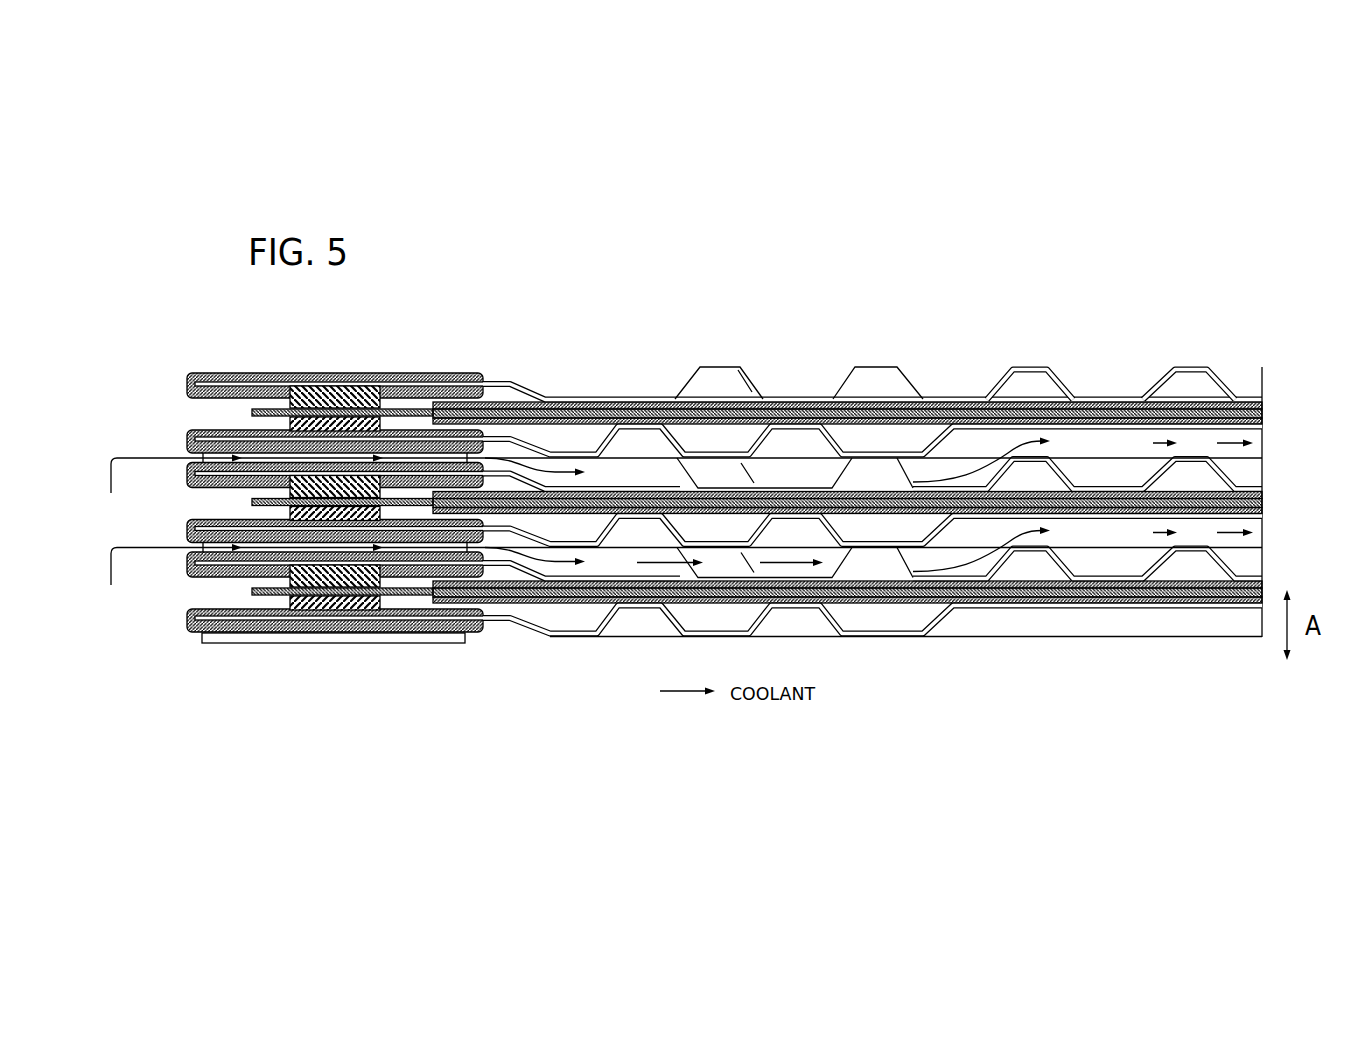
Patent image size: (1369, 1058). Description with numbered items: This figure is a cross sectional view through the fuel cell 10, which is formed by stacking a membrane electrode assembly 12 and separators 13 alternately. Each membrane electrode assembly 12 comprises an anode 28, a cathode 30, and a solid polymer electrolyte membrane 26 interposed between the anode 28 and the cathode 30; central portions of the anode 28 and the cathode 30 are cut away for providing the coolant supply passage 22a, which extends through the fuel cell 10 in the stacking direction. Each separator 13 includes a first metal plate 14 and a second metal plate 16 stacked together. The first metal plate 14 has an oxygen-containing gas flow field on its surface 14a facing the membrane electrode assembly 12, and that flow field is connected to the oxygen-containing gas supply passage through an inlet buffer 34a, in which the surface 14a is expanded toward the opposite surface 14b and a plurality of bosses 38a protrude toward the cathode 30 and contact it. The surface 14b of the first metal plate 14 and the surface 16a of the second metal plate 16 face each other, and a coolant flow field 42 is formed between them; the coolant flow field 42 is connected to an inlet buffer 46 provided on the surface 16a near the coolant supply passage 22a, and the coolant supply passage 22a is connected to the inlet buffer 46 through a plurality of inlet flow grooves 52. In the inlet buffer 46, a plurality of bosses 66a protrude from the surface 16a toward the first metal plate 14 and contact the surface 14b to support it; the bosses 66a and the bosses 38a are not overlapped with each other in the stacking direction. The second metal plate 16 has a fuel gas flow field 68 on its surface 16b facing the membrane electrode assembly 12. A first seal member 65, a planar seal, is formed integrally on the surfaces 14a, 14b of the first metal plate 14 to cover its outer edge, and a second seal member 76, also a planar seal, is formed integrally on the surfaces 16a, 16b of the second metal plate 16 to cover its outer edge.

The fuel cell 10 is at (476, 275).
The membrane electrode assembly 12 is at (1322, 385).
The separator 13 is at (1322, 520).
The first metal plate 14 is at (1247, 521).
The surface of the first metal plate 14a is at (903, 471).
The surface of the first metal plate 14b is at (937, 443).
The second metal plate 16 is at (1231, 379).
The surface of the second metal plate 16a is at (991, 569).
The surface of the second metal plate 16b is at (996, 575).
The coolant supply passage 22a is at (136, 597).
The solid polymer electrolyte membrane 26 is at (1263, 413).
The anode 28 is at (1263, 403).
The cathode 30 is at (1263, 424).
The inlet buffer 34a is at (687, 436).
The bosses 38a is at (837, 443).
The coolant flow field 42 is at (1108, 446).
The inlet buffer 46 is at (752, 452).
The inlet flow grooves 52 is at (315, 462).
The first seal member 65 is at (187, 441).
The bosses 66a is at (685, 469).
The fuel gas flow field 68 is at (1032, 566).
The second seal member 76 is at (185, 473).